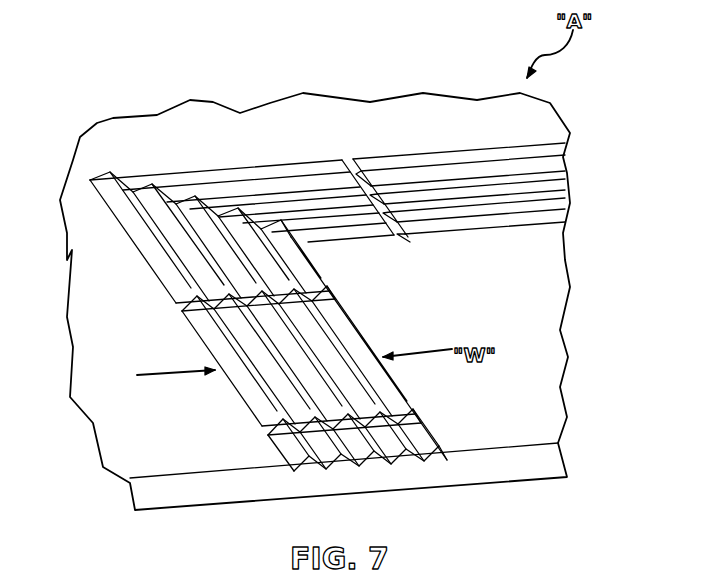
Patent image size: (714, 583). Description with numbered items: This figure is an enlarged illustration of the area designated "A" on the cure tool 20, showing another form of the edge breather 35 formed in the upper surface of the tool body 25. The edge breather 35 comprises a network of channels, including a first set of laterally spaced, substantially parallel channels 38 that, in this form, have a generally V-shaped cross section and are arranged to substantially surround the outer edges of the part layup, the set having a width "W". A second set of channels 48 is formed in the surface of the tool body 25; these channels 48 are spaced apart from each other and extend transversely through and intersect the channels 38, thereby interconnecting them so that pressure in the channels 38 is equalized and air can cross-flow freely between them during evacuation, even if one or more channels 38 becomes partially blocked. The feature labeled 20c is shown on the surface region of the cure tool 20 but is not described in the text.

The cure tool 20 is at (96, 160).
The panel surface 20c is at (497, 291).
The tool body 25 is at (148, 436).
The edge breather 35 is at (267, 145).
The channels 38 is at (489, 197).
The channels 48 is at (368, 178).